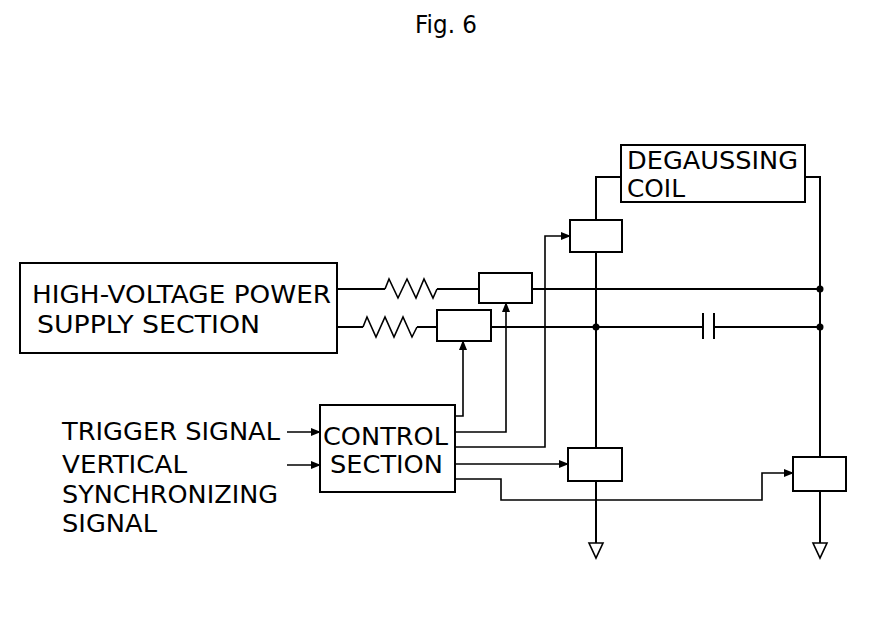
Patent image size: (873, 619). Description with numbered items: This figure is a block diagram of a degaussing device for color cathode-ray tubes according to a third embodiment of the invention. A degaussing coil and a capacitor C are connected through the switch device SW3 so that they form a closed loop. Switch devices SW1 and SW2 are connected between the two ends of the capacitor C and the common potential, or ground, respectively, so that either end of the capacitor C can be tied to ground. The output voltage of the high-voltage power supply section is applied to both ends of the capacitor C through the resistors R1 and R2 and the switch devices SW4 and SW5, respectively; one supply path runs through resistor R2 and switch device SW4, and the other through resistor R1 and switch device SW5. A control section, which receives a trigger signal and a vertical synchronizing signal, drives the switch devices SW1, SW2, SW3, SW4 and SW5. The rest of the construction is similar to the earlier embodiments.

The resistor R1 is at (390, 315).
The resistor R2 is at (411, 276).
The capacitor C is at (707, 336).
The switch device SW1 is at (595, 464).
The switch device SW2 is at (819, 474).
The switch device SW3 is at (596, 236).
The switch device SW4 is at (505, 288).
The switch device SW5 is at (464, 325).